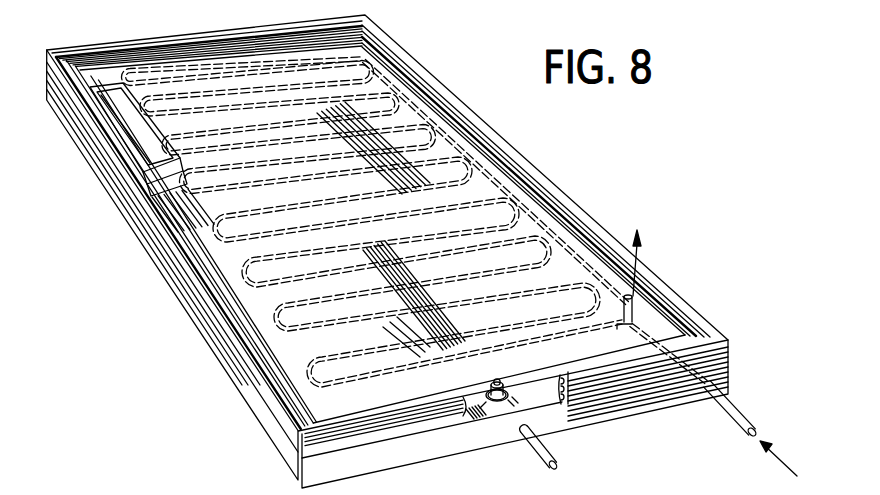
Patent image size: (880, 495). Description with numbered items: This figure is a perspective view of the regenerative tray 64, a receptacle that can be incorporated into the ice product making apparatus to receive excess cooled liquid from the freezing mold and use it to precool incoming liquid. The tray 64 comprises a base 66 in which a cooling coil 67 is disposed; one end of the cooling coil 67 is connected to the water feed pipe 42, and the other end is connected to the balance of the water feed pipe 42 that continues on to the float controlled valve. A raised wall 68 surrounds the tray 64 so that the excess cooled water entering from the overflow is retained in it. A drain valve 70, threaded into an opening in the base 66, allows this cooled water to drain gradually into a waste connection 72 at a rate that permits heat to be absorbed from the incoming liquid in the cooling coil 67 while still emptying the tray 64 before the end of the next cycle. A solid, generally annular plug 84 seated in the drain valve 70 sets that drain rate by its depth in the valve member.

The water feed pipe 42 is at (545, 213).
The tray 64 is at (196, 327).
The base 66 is at (232, 262).
The cooling coil 67 is at (410, 97).
The raised wall 68 is at (513, 175).
The drain valve 70 is at (511, 386).
The waste connection 72 is at (540, 453).
The plug 84 is at (496, 384).